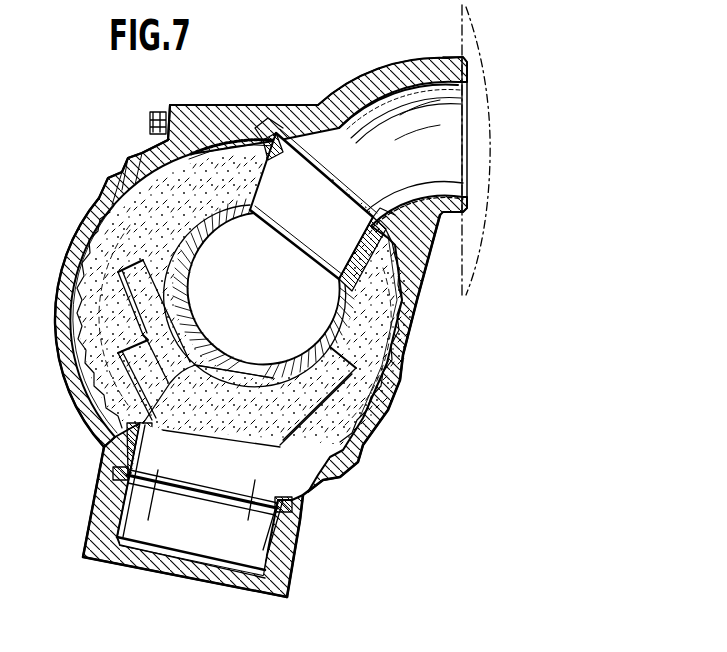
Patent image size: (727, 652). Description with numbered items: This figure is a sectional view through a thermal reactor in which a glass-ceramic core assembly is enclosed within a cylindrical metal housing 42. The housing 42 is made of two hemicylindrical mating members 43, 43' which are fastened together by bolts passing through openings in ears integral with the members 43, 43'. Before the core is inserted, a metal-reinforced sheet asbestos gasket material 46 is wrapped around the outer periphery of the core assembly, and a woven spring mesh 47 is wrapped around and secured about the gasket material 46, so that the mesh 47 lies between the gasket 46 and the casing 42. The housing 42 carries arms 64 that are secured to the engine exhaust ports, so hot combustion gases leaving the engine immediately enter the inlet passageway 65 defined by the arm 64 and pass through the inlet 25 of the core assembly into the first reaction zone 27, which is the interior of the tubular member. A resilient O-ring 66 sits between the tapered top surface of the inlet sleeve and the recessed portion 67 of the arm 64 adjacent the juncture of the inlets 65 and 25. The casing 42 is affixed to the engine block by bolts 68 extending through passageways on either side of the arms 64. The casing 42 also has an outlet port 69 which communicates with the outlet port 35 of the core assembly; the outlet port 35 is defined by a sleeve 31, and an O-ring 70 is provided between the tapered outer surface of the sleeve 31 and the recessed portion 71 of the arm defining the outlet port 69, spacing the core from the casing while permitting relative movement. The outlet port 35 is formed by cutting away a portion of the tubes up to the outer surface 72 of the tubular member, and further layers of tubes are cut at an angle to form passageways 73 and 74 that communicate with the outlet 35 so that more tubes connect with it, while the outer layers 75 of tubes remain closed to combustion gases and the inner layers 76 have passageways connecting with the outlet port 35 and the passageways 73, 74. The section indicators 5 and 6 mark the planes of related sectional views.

The inlet port 25 is at (321, 244).
The interior of tubular member 27 is at (230, 330).
The sleeve 31 is at (133, 455).
The outlet port 35 is at (207, 473).
The cylindrical metal housing 42 is at (76, 412).
The hemicylindrical mating member 43 is at (63, 322).
The hemicylindrical mating member 43' is at (387, 343).
The gasket material 46 is at (72, 304).
The woven spring mesh 47 is at (93, 225).
The arm 64 is at (384, 82).
The inlet passageway 65 is at (453, 141).
The O-ring 66 is at (268, 114).
The recessed portion 67 is at (393, 208).
The bolt 68 is at (150, 116).
The outlet port 69 is at (130, 570).
The O-ring 70 is at (297, 497).
The recessed portion 71 is at (270, 500).
The outer surface of tubular member 72 is at (238, 375).
The passageway 73 is at (162, 380).
The passageway 74 is at (277, 408).
The outer layers of tubes 75 is at (108, 200).
The inner layers of tubes 76 is at (150, 160).
The section line 5 is at (340, 177).
The section line 6 is at (110, 137).